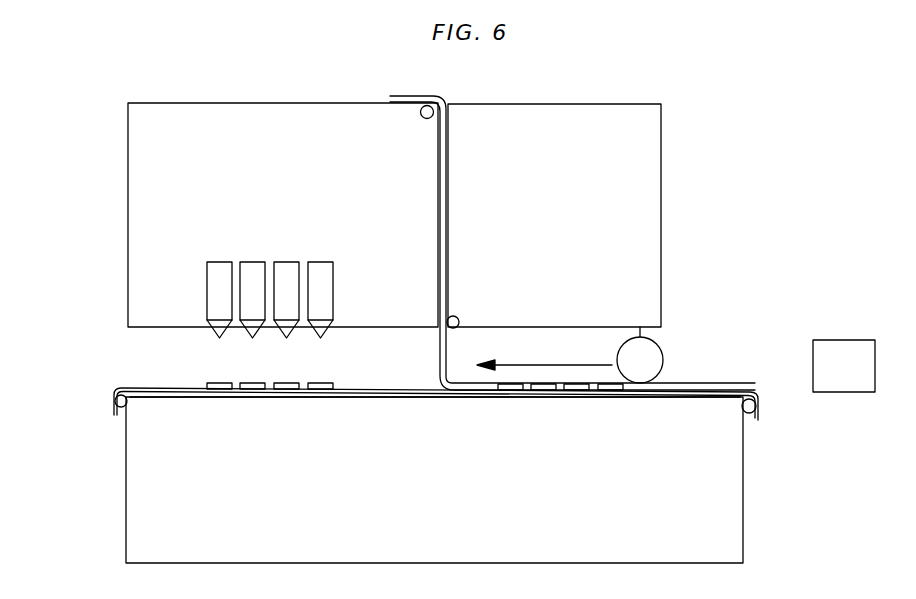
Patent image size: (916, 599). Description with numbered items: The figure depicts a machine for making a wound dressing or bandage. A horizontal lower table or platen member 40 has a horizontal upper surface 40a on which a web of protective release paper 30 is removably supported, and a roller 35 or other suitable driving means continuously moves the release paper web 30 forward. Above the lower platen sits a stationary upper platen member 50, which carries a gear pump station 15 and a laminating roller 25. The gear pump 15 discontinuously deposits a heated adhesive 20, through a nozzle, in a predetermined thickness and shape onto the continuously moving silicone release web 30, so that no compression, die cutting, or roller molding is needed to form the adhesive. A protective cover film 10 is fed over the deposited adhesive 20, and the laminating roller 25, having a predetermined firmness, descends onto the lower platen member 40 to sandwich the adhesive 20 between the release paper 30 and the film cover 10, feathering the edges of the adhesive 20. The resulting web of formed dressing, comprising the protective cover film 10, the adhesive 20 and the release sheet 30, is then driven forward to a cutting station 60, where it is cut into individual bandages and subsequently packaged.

The protective cover film 10 is at (405, 96).
The gear pump 15 is at (251, 262).
The adhesive 20 is at (333, 378).
The laminating roller 25 is at (662, 356).
The protective release paper web 30 is at (114, 388).
The roller 35 is at (121, 409).
The horizontal lower platen member 40 is at (744, 486).
The horizontal upper surface 40a is at (168, 397).
The stationary upper platen member 50 is at (128, 206).
The cutting station 60 is at (862, 378).